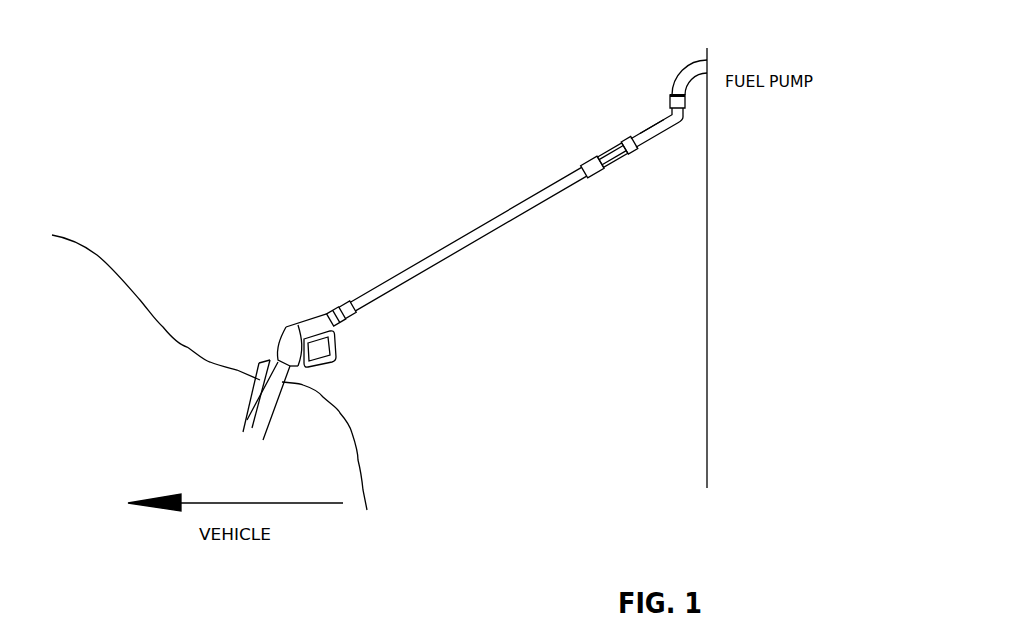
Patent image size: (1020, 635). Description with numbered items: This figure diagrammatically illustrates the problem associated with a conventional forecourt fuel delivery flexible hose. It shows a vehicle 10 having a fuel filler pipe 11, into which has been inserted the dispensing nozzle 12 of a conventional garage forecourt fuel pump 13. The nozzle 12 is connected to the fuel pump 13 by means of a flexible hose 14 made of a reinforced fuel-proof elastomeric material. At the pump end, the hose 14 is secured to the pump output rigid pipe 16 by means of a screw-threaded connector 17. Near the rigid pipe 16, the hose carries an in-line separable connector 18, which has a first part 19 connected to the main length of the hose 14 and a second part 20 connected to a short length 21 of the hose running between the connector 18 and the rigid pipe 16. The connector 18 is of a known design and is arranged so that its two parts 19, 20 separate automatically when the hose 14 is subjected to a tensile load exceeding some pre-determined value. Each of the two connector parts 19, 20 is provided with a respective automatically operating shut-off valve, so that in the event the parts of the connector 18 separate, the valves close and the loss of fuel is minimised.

The vehicle 10 is at (112, 312).
The fuel filler pipe 11 is at (243, 382).
The dispensing nozzle 12 is at (289, 341).
The fuel pump 13 is at (716, 296).
The flexible hose 14 is at (423, 268).
The pump output rigid pipe 16 is at (682, 78).
The screw-threaded connector 17 is at (690, 110).
The in-line separable connector 18 is at (602, 152).
The first part 19 is at (598, 178).
The second part 20 is at (630, 160).
The short length of the hose 21 is at (645, 128).